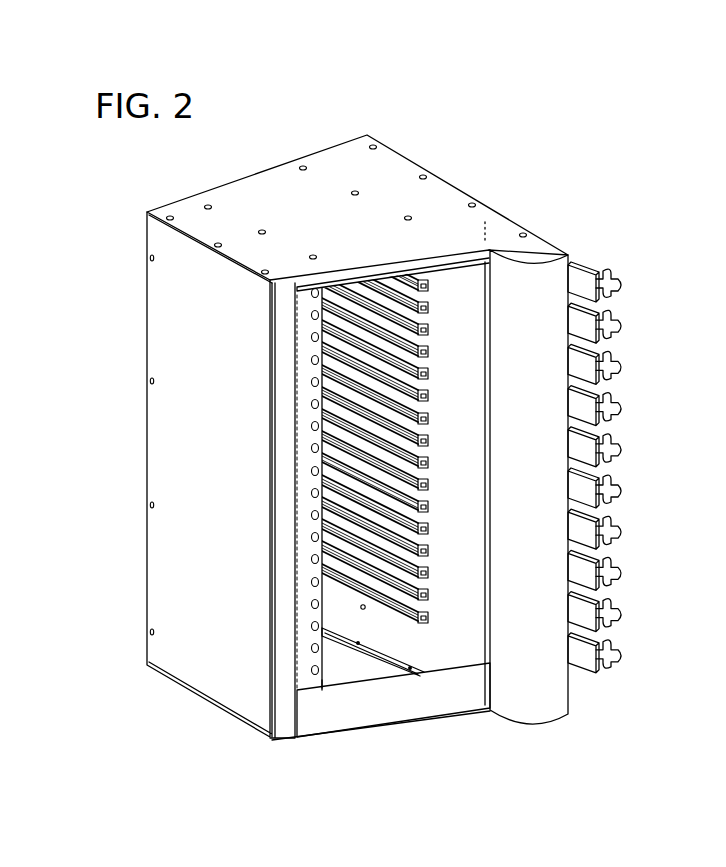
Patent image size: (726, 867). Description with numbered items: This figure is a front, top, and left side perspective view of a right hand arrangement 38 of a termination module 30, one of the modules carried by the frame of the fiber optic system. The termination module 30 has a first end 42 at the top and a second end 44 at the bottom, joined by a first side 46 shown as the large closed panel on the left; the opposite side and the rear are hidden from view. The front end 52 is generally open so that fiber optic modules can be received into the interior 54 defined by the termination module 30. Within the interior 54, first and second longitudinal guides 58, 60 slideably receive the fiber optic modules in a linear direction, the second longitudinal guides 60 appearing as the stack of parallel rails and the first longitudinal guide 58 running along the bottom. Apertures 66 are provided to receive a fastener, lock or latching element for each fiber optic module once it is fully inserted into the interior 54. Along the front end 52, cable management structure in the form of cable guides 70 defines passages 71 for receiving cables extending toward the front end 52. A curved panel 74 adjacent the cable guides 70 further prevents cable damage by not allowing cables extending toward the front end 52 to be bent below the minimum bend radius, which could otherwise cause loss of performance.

The termination module 30 is at (281, 120).
The right hand arrangement 38 is at (357, 197).
The first end 42 is at (320, 221).
The second end 44 is at (358, 727).
The first side 46 is at (190, 437).
The front end 52 is at (496, 468).
The interior 54 is at (460, 287).
The first longitudinal guide 58 is at (322, 656).
The second longitudinal guide 60 is at (428, 623).
The apertures 66 is at (325, 683).
The cable guides 70 is at (607, 467).
The passages 71 is at (584, 302).
The curved panel 74 is at (538, 727).